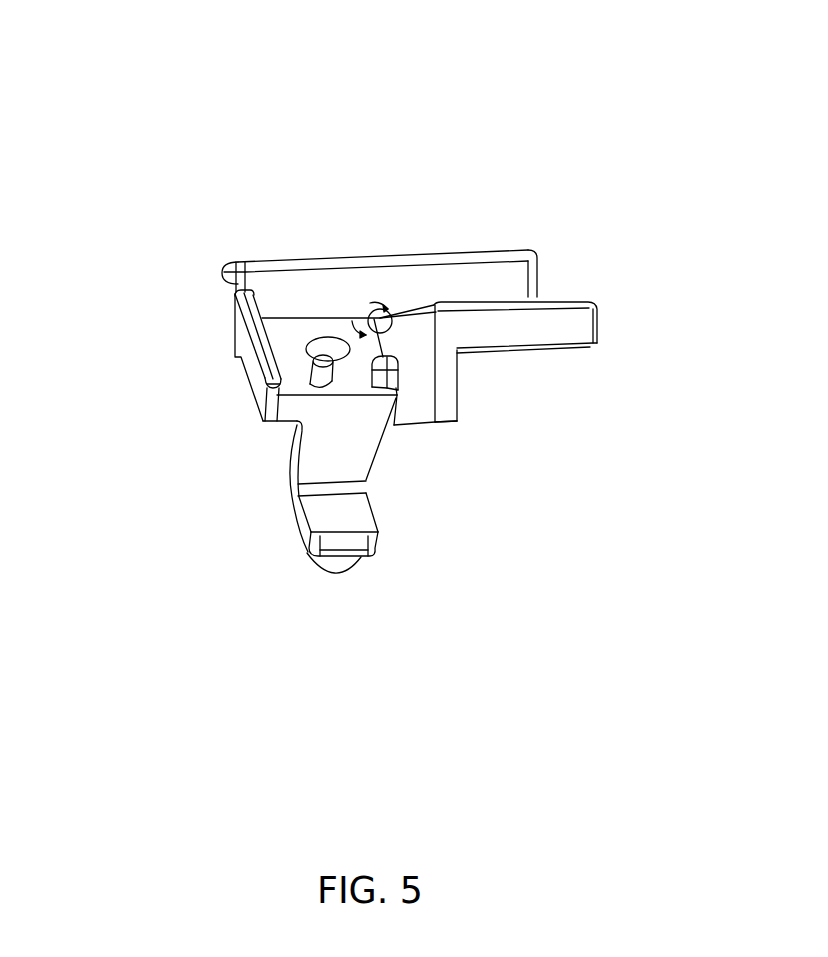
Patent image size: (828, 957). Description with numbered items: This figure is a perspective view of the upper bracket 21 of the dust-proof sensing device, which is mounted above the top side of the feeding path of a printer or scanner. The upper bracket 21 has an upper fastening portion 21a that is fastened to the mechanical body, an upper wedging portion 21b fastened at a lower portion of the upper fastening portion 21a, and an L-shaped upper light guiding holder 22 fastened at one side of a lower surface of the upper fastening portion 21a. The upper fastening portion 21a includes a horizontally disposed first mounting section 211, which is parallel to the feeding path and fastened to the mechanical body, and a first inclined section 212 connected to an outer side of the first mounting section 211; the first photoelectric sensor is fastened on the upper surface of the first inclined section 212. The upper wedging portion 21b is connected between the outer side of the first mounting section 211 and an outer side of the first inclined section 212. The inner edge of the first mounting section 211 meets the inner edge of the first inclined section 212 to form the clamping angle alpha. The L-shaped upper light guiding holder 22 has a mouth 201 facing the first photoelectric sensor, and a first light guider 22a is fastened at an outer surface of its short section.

The upper bracket 21 is at (92, 40).
The first mounting section 211 is at (586, 301).
The upper fastening portion 21a is at (566, 336).
The upper wedging portion 21b is at (450, 400).
The first inclined section 212 is at (280, 419).
The L-shaped upper light guiding holder 22 is at (318, 505).
The mouth 201 is at (323, 513).
The first light guider 22a is at (354, 562).